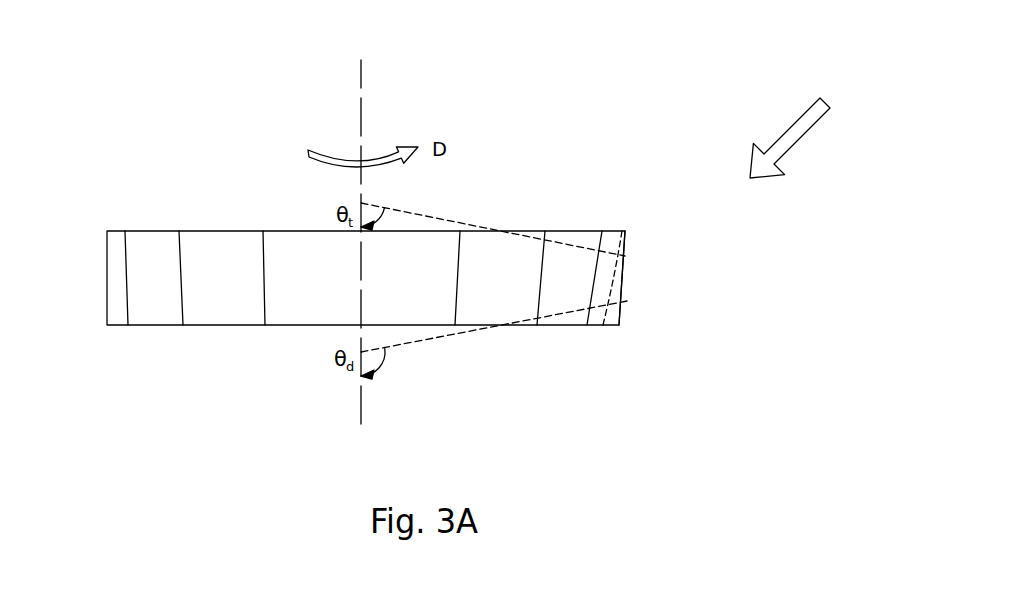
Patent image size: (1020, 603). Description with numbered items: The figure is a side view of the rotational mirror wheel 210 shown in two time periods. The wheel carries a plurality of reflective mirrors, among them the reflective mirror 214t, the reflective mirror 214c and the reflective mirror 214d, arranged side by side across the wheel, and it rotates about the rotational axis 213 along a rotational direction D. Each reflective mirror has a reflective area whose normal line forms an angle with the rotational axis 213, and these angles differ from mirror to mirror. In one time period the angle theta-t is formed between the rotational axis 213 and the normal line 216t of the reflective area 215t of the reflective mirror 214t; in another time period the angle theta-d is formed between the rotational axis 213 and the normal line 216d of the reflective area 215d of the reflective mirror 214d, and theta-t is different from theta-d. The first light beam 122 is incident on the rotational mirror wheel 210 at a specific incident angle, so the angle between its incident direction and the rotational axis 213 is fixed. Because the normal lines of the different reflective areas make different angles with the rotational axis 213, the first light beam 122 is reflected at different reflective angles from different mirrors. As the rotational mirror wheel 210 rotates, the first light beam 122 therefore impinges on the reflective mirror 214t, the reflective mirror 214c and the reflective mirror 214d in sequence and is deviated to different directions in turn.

The rotational mirror wheel 210 is at (100, 72).
The rotational axis 213 is at (368, 101).
The reflective mirror 214c is at (117, 235).
The reflective mirror 214t is at (623, 231).
The reflective mirror 214d is at (620, 325).
The reflective area 215t is at (627, 238).
The reflective area 215d is at (627, 317).
The normal line 216t is at (632, 261).
The normal line 216d is at (633, 286).
The first light beam 122 is at (795, 133).